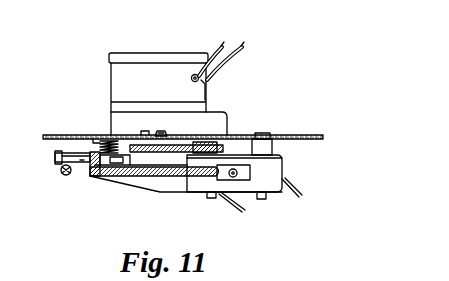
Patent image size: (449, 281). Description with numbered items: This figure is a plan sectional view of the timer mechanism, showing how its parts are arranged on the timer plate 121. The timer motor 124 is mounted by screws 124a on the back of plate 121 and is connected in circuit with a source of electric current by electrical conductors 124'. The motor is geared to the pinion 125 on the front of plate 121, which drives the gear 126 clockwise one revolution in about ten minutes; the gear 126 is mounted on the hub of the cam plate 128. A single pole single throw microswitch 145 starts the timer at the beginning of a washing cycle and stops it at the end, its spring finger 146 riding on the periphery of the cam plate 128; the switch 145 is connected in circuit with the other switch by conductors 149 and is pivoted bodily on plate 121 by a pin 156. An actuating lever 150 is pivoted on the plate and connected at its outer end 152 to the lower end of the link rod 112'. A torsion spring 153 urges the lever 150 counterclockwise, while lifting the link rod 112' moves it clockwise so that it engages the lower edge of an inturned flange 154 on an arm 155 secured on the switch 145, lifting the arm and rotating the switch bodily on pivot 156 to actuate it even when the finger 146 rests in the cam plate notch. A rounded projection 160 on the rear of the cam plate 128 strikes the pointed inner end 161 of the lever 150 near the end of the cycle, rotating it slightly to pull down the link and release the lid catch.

The timer plate 121 is at (45, 135).
The timer motor 124 is at (155, 77).
The screws 124a is at (161, 132).
The electrical conductors 124' is at (238, 71).
The pinion 125 is at (212, 137).
The gear 126 is at (145, 135).
The torsion spring 153 is at (95, 137).
The inturned flange 154 is at (85, 137).
The cam plate 128 is at (103, 176).
The pointed inner end 161 is at (130, 160).
The arm 155 is at (152, 191).
The single pole single throw microswitch 145 is at (283, 162).
The spring finger 146 is at (222, 174).
The pin 156 is at (267, 199).
The conductors 149 is at (300, 190).
The outer end 152 is at (55, 157).
The link rod 112' is at (49, 192).
The actuating lever 150 is at (83, 163).
The rounded projection 160 is at (97, 170).